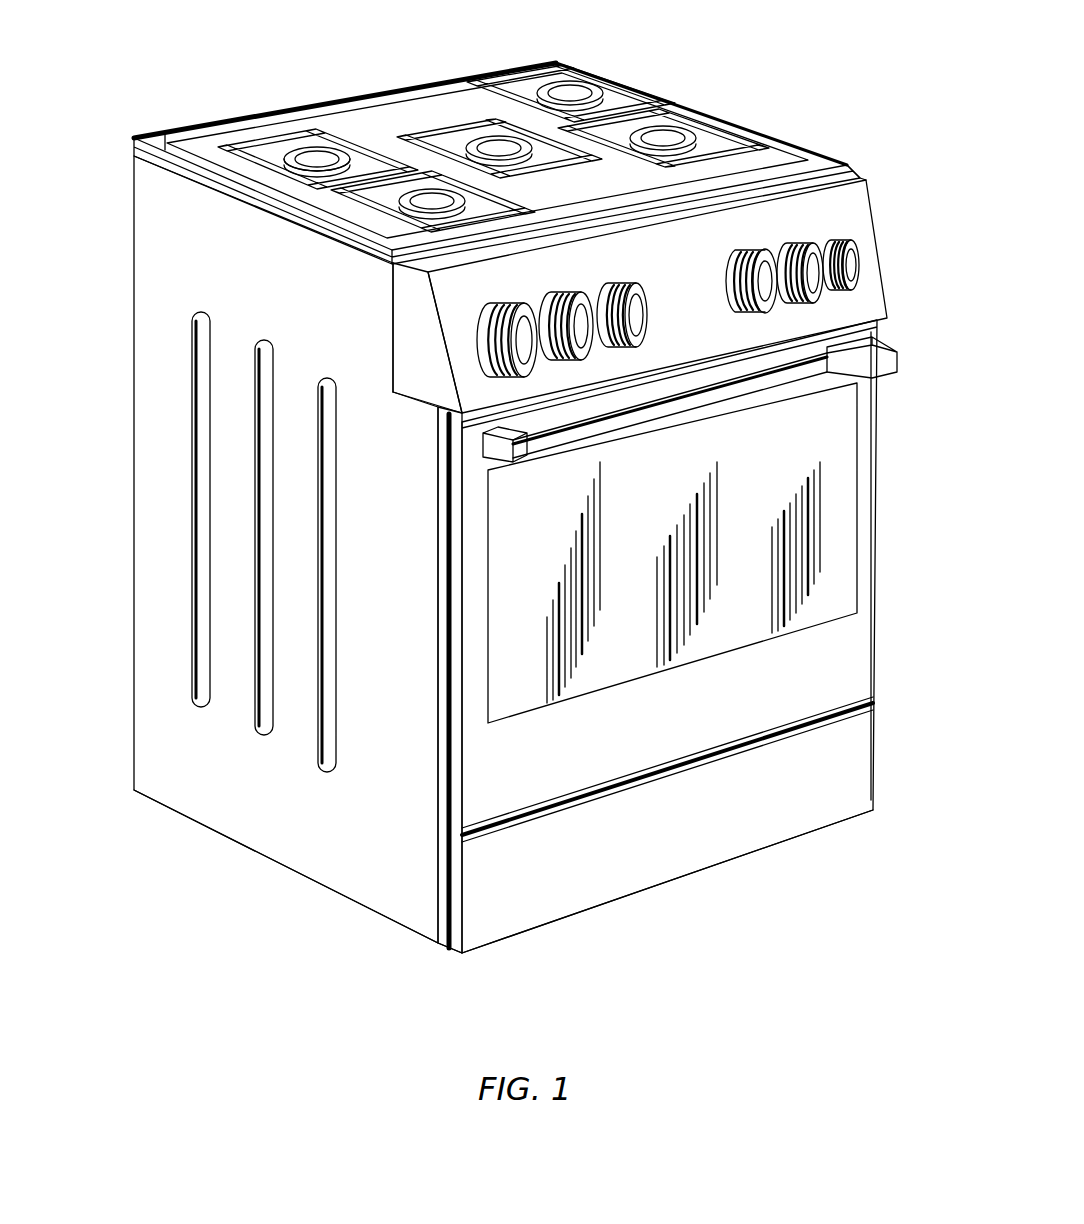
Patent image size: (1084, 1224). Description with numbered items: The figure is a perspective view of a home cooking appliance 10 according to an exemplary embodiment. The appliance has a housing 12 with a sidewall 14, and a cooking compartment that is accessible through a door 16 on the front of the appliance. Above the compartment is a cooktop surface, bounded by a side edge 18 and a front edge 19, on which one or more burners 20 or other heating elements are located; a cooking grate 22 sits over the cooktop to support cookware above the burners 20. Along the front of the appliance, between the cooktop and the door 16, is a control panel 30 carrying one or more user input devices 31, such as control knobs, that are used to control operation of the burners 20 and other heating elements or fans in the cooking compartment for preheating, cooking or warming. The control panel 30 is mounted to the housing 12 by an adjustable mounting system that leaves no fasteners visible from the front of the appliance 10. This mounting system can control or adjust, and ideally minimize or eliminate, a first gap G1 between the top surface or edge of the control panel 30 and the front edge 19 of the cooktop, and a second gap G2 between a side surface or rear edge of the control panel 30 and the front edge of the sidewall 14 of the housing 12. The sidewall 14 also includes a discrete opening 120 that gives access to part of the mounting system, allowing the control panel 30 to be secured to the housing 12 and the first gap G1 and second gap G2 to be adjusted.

The home cooking appliance 10 is at (809, 963).
The housing 12 is at (133, 468).
The sidewall 14 is at (236, 265).
The door 16 is at (880, 497).
The side edge 18 is at (165, 147).
The front edge 19 is at (748, 183).
The burner 20 is at (556, 88).
The cooking grate 22 is at (665, 104).
The control panel 30 is at (886, 254).
The user input device 31 is at (646, 312).
The opening 120 is at (384, 272).
The first gap G1 is at (835, 165).
The second gap G2 is at (394, 337).